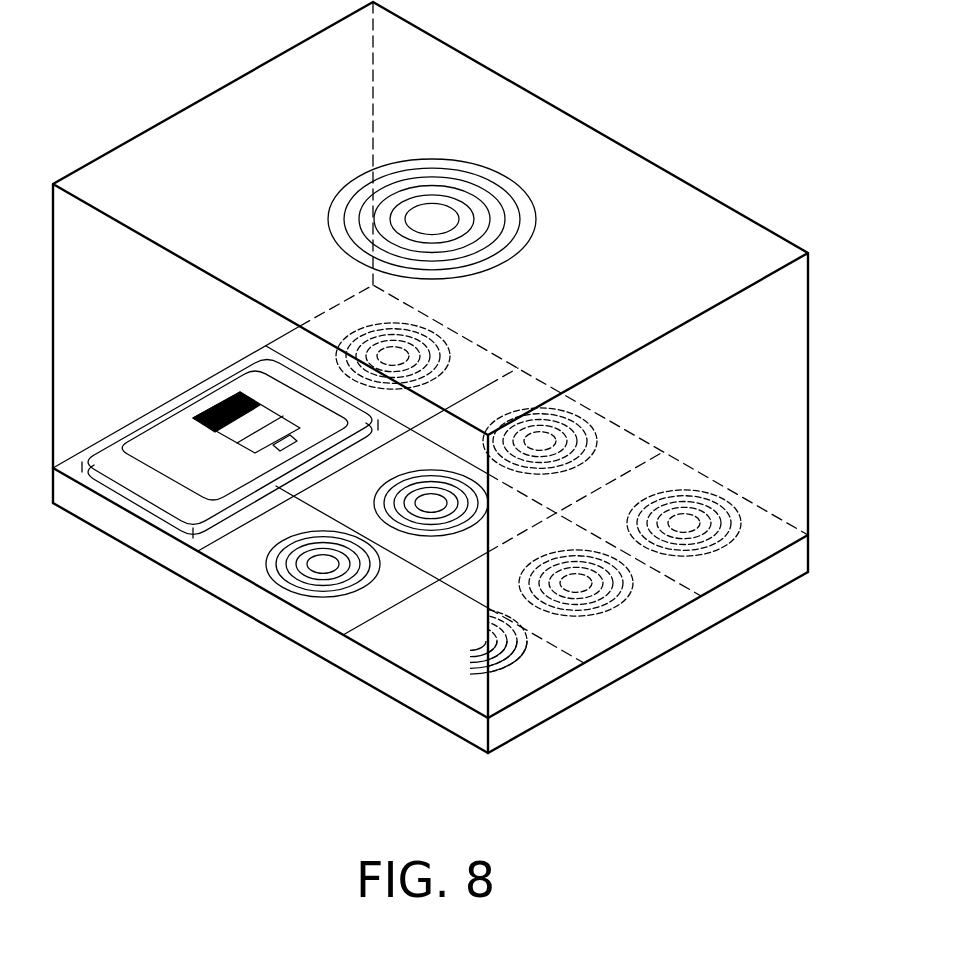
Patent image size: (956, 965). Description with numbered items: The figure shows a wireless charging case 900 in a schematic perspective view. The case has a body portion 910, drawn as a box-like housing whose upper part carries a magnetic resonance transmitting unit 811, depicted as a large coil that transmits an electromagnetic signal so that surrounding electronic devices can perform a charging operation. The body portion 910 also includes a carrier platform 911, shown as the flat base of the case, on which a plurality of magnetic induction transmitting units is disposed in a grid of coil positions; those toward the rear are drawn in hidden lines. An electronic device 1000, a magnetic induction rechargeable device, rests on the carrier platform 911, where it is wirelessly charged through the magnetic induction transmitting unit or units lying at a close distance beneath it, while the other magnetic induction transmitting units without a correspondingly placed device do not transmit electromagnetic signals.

The magnetic resonance transmitting unit 811 is at (528, 197).
The wireless charging case 900 is at (430, 390).
The body portion 910 is at (703, 203).
The carrier platform 911 is at (702, 612).
The electronic device 1000 is at (130, 495).